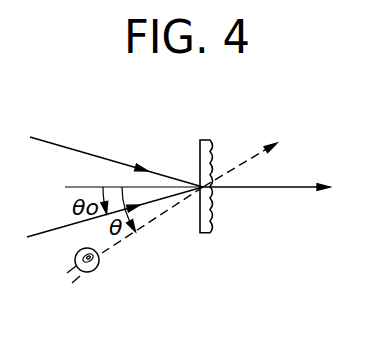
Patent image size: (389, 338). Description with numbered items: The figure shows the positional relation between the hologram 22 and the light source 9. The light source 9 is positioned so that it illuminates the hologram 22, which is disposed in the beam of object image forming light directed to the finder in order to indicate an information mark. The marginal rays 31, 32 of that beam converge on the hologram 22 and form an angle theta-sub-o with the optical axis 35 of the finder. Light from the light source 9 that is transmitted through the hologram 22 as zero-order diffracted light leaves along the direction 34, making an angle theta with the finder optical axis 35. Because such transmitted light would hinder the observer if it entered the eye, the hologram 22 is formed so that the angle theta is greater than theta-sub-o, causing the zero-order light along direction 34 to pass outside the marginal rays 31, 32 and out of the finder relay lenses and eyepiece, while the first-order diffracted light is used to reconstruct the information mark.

The light source 9 is at (92, 273).
The hologram 22 is at (212, 147).
The marginal ray 31 is at (35, 238).
The marginal ray 32 is at (100, 156).
The diffracted beam direction 34 is at (152, 223).
The optical axis 35 is at (297, 186).